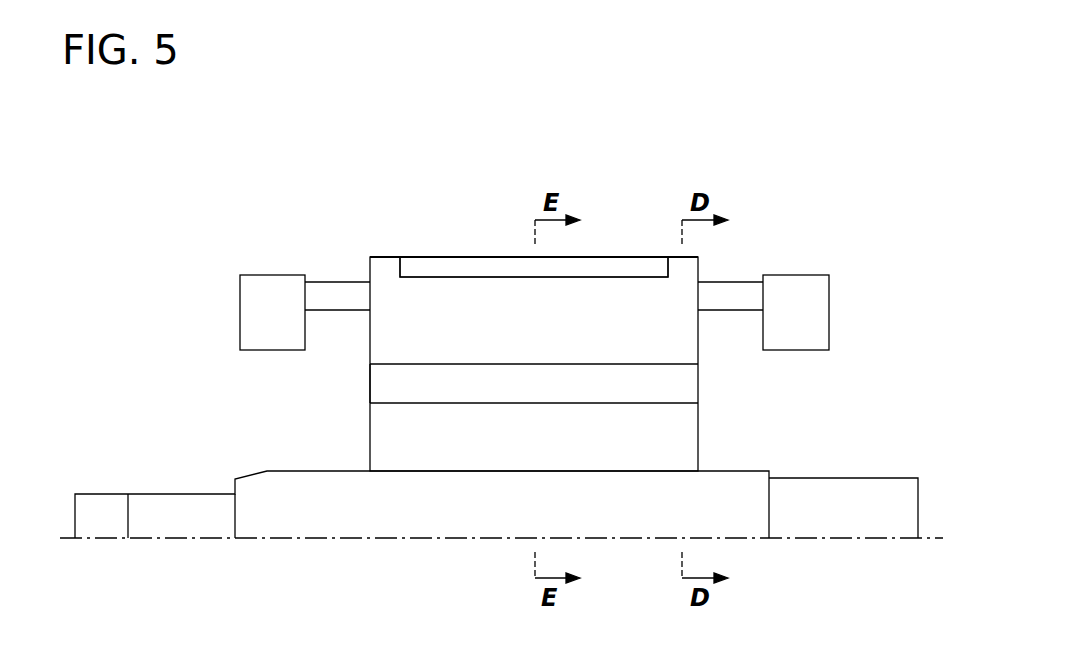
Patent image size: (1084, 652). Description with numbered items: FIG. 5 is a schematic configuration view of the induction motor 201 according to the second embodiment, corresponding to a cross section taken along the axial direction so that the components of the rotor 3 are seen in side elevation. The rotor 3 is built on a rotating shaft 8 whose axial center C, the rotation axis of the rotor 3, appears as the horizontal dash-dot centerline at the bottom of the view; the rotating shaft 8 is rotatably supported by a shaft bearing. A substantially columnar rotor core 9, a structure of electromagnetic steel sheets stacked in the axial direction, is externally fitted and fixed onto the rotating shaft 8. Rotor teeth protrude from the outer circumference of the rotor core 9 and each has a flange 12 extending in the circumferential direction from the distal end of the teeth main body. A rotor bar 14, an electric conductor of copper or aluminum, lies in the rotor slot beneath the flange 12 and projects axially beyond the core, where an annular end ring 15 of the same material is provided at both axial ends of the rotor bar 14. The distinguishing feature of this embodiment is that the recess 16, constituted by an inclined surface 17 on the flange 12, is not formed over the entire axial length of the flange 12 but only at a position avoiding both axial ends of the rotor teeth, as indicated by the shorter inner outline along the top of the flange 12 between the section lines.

The induction motor 201 is at (305, 193).
The rotor 3 is at (718, 413).
The rotating shaft 8 is at (862, 478).
The rotor core 9 is at (370, 347).
The flange 12 is at (388, 257).
The rotor bar 14 is at (337, 281).
The end ring 15 is at (240, 324).
The recess 16 is at (460, 277).
The inclined surface 17 is at (534, 267).
The axial center C is at (872, 540).